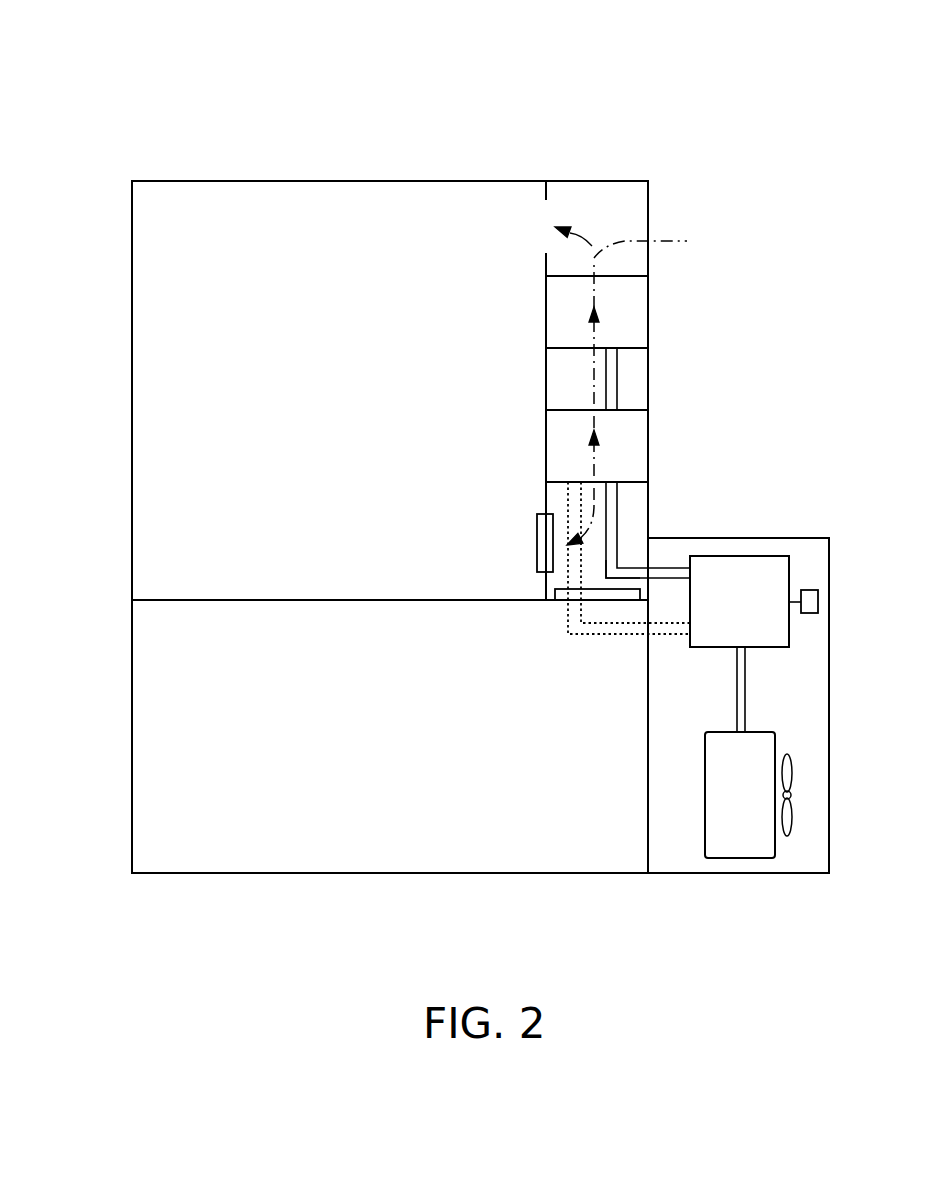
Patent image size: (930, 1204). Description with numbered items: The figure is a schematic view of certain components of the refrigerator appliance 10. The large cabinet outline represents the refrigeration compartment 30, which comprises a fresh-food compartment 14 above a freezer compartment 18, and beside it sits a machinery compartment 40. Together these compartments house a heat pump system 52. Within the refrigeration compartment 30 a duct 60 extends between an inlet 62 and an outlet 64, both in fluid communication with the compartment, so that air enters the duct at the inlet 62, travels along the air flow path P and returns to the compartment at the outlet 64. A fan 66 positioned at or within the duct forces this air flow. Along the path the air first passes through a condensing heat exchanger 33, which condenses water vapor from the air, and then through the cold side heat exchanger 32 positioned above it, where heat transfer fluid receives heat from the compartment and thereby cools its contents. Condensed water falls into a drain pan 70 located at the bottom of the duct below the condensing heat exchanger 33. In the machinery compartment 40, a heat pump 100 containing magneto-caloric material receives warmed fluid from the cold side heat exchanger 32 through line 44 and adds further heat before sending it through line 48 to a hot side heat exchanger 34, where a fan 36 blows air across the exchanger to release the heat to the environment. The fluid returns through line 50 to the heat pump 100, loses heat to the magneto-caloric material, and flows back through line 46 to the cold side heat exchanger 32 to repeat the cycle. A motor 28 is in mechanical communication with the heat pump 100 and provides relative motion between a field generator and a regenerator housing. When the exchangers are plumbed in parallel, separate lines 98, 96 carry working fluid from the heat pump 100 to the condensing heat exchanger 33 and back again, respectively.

The refrigerator appliance 10 is at (733, 65).
The fresh-food compartment 14 is at (150, 413).
The freezer compartment 18 is at (153, 800).
The motor 28 is at (811, 604).
The refrigeration compartment 30 is at (244, 199).
The cold side heat exchanger 32 is at (625, 312).
The condensing heat exchanger 33 is at (625, 442).
The hot side heat exchanger 34 is at (740, 835).
The fan 36 is at (792, 795).
The machinery compartment 40 is at (808, 678).
The line 44 is at (657, 567).
The line 46 is at (627, 578).
The line 48 is at (735, 707).
The line 50 is at (745, 717).
The heat pump system 52 is at (805, 546).
The duct 60 is at (558, 378).
The inlet 62 is at (533, 500).
The outlet 64 is at (536, 266).
The fan 66 is at (547, 543).
The drain pan 70 is at (560, 595).
The line 96 is at (663, 636).
The line 98 is at (662, 622).
The heat pump 100 is at (732, 577).
The air flow path P is at (633, 242).